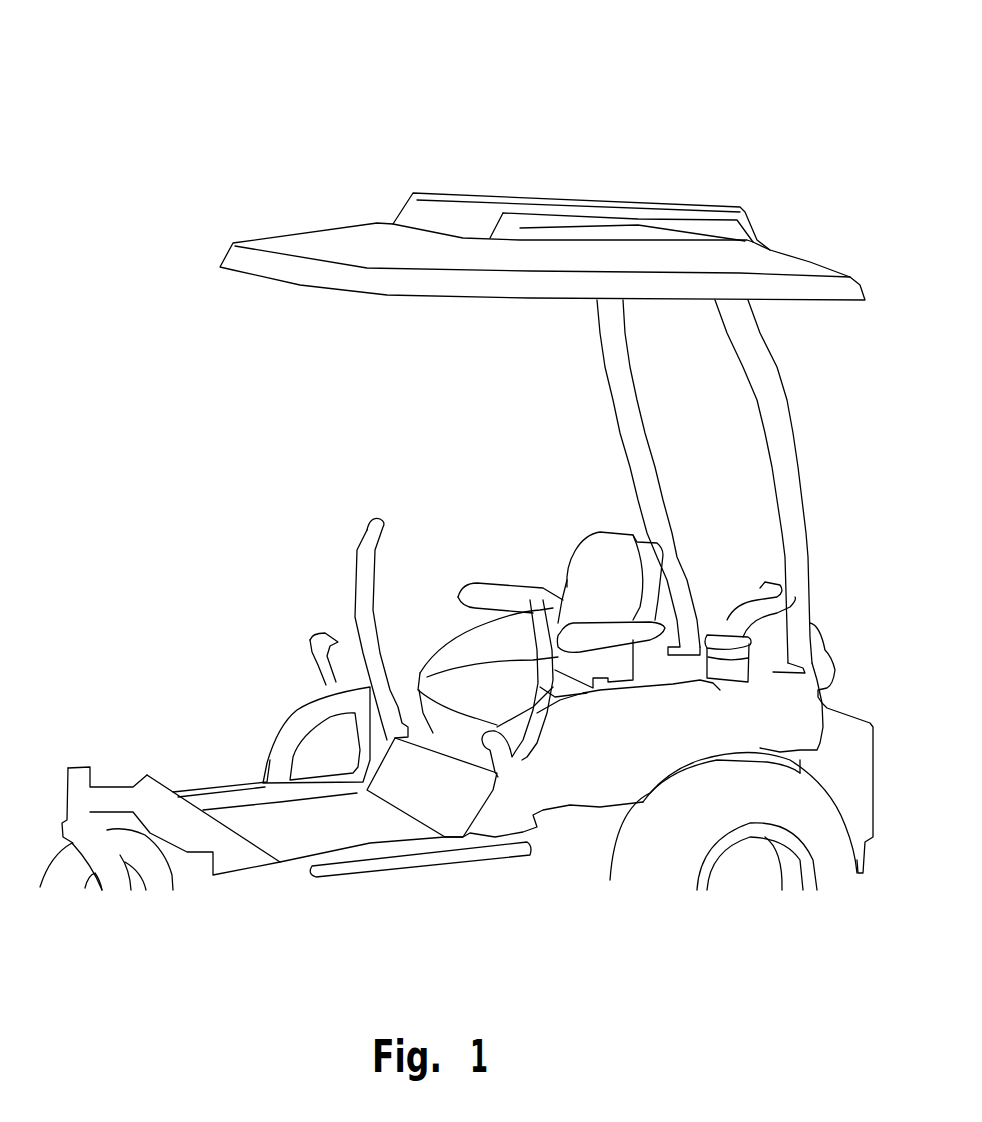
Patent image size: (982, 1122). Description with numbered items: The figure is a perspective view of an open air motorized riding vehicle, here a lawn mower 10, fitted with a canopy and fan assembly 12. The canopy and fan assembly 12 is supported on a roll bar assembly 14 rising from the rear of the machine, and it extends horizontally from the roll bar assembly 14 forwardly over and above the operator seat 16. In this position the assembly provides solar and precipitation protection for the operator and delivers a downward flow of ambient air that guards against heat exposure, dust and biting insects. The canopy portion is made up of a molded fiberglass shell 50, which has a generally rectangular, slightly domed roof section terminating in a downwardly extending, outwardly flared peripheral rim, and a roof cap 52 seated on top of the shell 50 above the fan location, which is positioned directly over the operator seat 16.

The lawn mower 10 is at (456, 674).
The canopy and fan assembly 12 is at (482, 351).
The roll bar assembly 14 is at (615, 393).
The operator seat 16 is at (582, 577).
The molded fiberglass shell 50 is at (245, 258).
The roof cap 52 is at (540, 192).